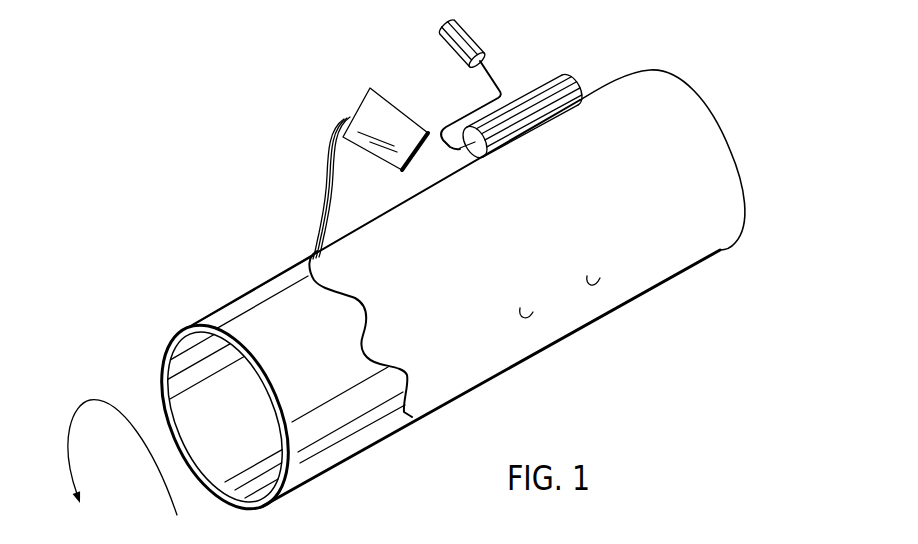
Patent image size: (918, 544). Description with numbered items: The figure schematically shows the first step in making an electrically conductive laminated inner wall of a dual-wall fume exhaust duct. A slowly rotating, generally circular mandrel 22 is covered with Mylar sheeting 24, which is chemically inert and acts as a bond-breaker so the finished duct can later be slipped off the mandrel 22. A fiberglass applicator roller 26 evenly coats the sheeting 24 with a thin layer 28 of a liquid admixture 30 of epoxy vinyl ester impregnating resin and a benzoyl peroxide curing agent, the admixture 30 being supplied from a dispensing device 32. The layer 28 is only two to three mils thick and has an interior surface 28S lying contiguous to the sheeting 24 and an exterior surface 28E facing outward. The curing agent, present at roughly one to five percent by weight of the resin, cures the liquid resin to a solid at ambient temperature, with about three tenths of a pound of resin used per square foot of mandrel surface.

The mandrel 22 is at (247, 275).
The Mylar sheeting 24 is at (332, 417).
The fiberglass applicator roller 26 is at (533, 88).
The thin layer 28 is at (673, 216).
The exterior surface 28E is at (612, 260).
The interior surface 28S is at (545, 296).
The liquid admixture 30 is at (322, 140).
The dispensing device 32 is at (383, 88).